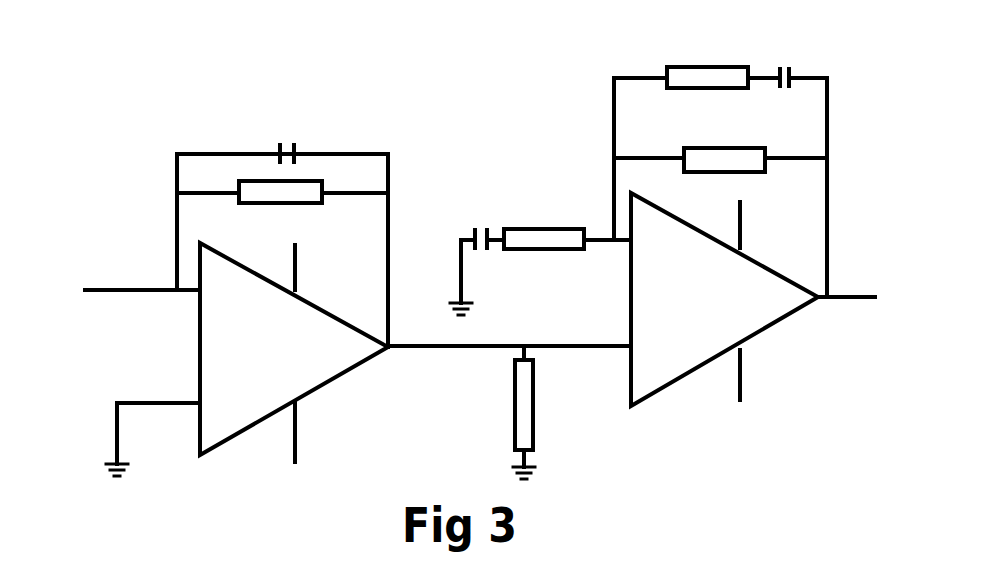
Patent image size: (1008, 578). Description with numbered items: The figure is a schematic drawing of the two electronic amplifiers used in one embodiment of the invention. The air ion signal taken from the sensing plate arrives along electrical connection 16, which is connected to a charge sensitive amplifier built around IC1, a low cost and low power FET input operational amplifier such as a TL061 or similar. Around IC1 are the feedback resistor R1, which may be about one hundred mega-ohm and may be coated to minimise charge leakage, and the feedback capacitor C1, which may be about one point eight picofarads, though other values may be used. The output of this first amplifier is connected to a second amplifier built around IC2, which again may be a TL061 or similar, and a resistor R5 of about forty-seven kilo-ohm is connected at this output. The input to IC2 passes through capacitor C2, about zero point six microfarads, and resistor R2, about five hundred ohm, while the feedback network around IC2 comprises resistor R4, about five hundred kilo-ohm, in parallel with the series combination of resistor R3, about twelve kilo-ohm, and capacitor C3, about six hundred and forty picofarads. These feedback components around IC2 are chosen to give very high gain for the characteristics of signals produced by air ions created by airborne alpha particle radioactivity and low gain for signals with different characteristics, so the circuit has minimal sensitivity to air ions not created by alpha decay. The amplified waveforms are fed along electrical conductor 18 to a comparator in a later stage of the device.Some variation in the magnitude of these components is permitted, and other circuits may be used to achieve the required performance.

The electrical connection 16 is at (112, 283).
The electrical conductor 18 is at (851, 284).
The charge sensitive amplifier IC1 is at (336, 356).
The second amplifier IC2 is at (746, 300).
The feedback resistor R1 is at (280, 210).
The feedback capacitor C1 is at (286, 127).
The resistor R2 is at (559, 266).
The capacitor C2 is at (473, 255).
The resistor R3 is at (707, 59).
The capacitor C3 is at (785, 58).
The resistor R4 is at (724, 143).
The resistor R5 is at (556, 412).